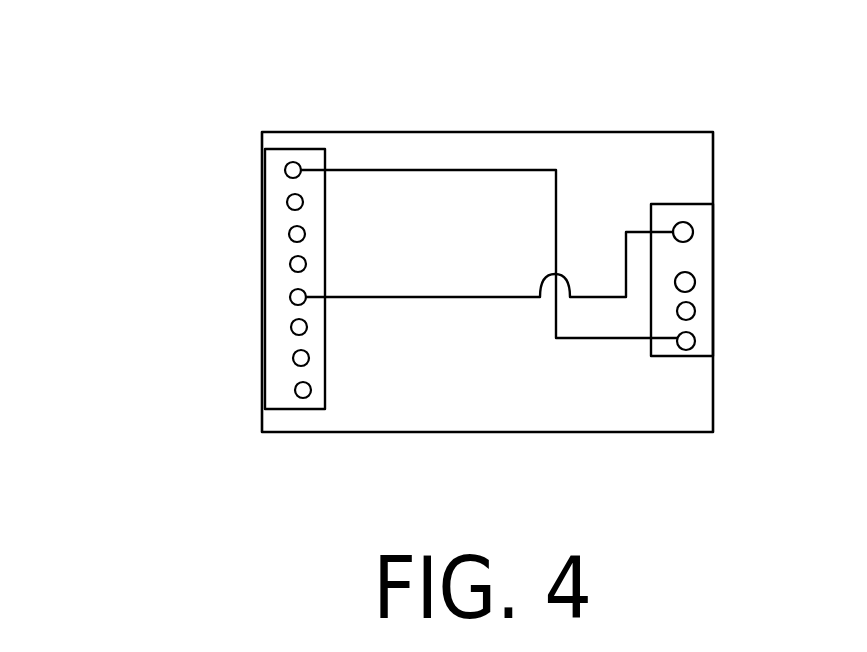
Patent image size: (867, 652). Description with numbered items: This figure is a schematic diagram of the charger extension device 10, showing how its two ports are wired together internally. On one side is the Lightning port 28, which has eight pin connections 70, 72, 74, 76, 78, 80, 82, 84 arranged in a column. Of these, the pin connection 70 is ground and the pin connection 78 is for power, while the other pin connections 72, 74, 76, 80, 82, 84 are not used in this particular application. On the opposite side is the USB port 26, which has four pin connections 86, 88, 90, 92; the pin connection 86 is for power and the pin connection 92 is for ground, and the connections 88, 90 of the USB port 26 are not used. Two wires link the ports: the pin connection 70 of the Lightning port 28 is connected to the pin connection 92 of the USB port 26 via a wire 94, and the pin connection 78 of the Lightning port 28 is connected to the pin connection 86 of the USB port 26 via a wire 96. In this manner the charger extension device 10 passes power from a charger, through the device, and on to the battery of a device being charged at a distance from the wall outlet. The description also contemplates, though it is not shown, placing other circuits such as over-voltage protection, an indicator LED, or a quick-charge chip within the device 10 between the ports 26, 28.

The charger extension device 10 is at (536, 106).
The USB port 26 is at (700, 256).
The Lightning port 28 is at (273, 275).
The pin connection 70 is at (285, 170).
The pin connection 72 is at (287, 202).
The pin connection 74 is at (289, 234).
The pin connection 76 is at (290, 264).
The pin connection 78 is at (291, 299).
The pin connection 80 is at (292, 329).
The pin connection 82 is at (294, 360).
The pin connection 84 is at (296, 391).
The pin connection 86 is at (694, 228).
The pin connection 88 is at (696, 282).
The pin connection 90 is at (696, 311).
The pin connection 92 is at (696, 341).
The wire 94 is at (390, 170).
The wire 96 is at (403, 297).